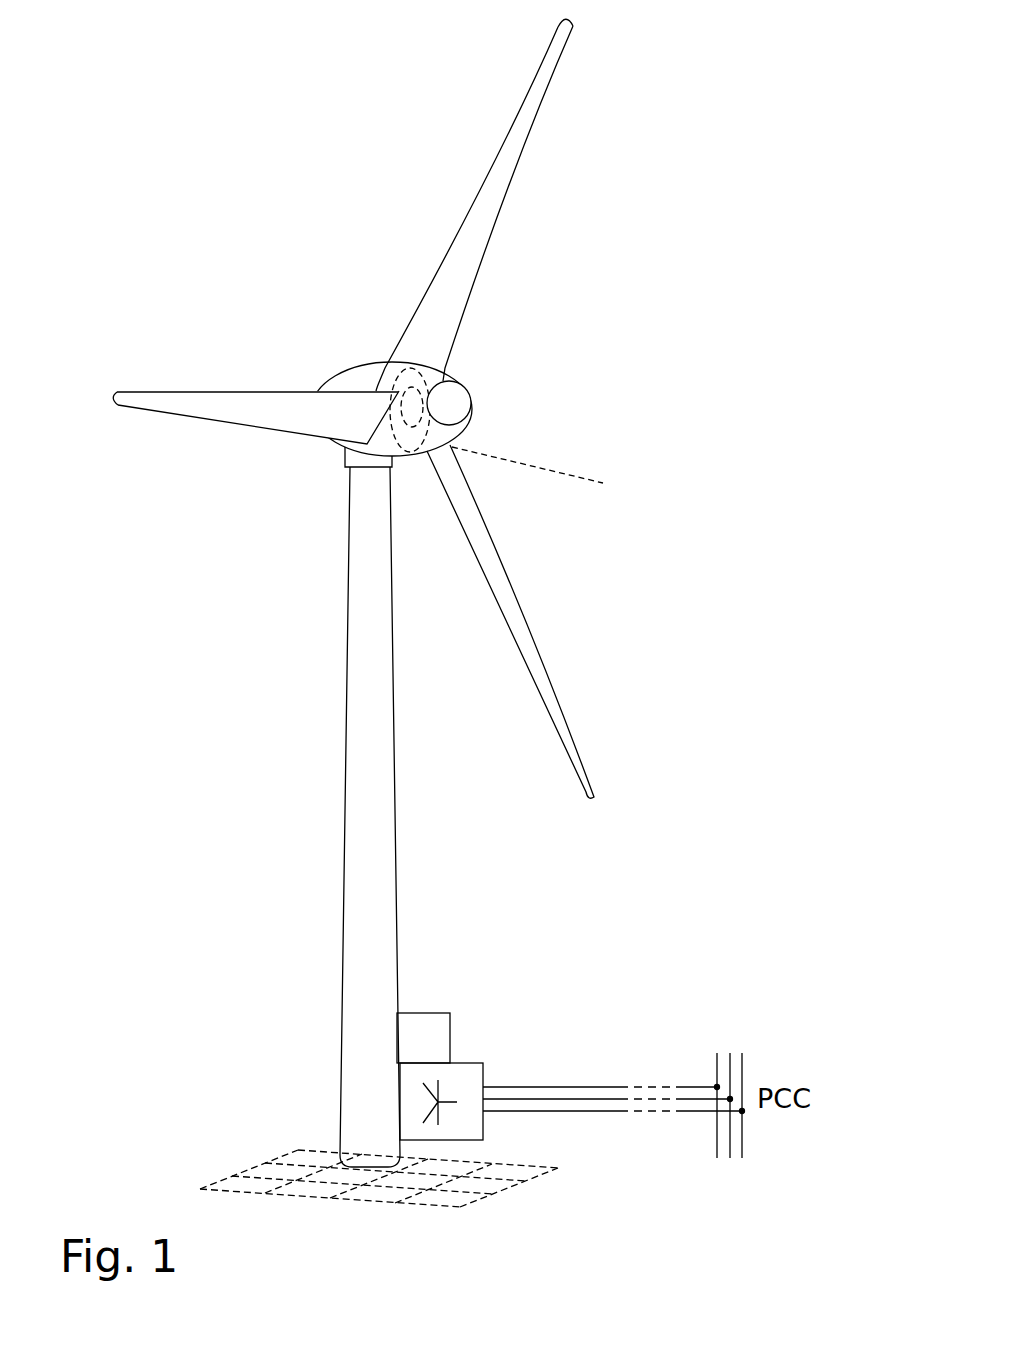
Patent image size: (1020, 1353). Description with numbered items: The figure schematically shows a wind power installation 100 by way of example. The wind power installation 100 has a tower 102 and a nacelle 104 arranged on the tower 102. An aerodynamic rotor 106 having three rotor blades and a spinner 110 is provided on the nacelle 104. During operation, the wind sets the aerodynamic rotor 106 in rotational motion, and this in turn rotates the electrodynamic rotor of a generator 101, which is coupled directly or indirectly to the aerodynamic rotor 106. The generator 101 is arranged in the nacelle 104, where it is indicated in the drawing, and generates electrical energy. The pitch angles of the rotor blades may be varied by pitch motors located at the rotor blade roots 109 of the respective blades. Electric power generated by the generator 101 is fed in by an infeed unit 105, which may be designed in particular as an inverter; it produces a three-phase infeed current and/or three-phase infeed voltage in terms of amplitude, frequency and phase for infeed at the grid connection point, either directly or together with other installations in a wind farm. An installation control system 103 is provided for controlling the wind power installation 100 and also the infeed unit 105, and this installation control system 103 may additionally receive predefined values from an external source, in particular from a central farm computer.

The wind power installation 100 is at (287, 543).
The generator 101 is at (412, 376).
The tower 102 is at (388, 907).
The installation control system 103 is at (443, 1030).
The nacelle 104 is at (356, 380).
The infeed unit 105 is at (483, 1135).
The aerodynamic rotor 106 is at (608, 302).
The rotor blade roots 109 is at (556, 474).
The spinner 110 is at (458, 404).